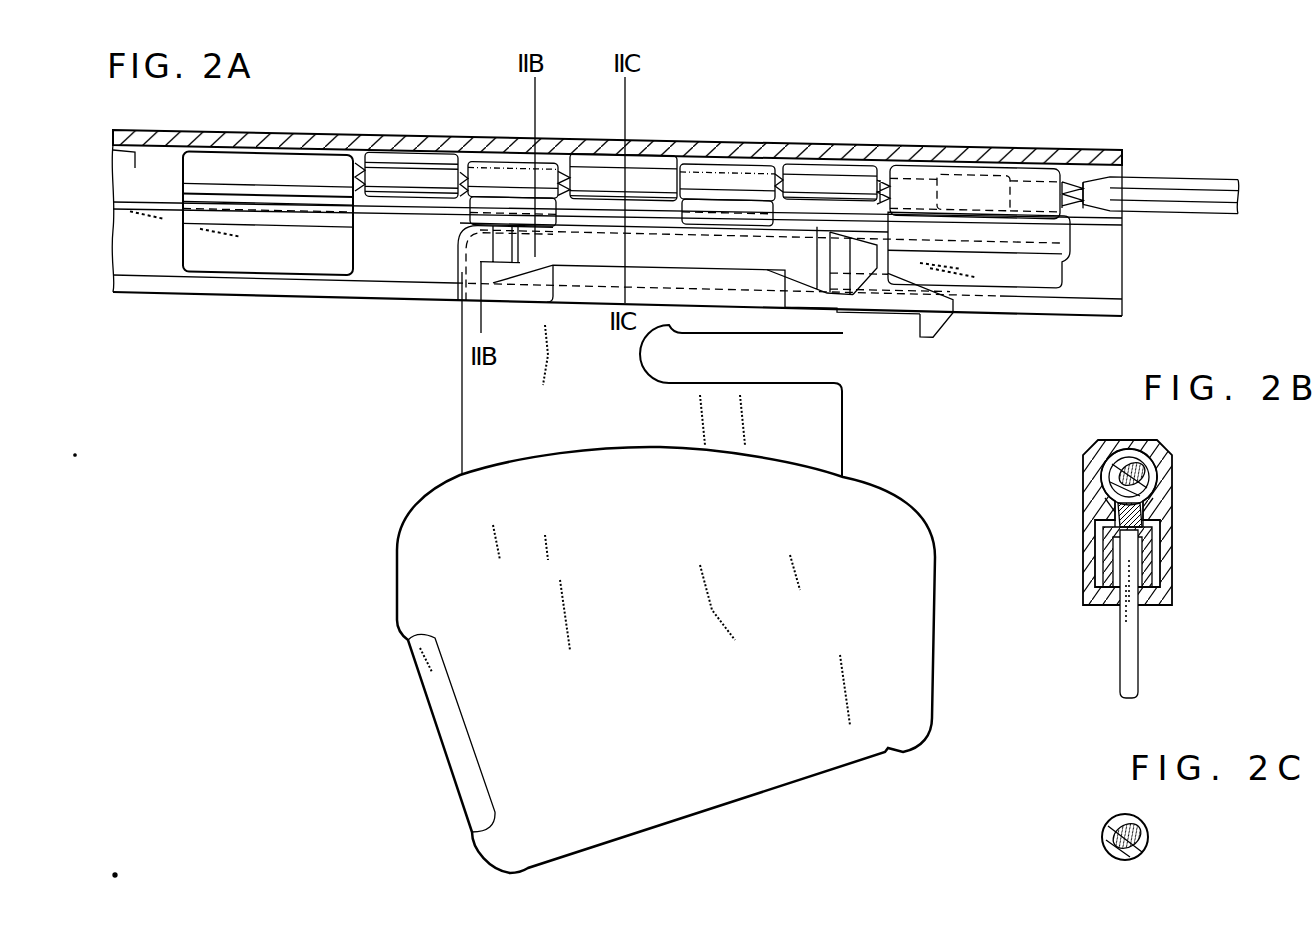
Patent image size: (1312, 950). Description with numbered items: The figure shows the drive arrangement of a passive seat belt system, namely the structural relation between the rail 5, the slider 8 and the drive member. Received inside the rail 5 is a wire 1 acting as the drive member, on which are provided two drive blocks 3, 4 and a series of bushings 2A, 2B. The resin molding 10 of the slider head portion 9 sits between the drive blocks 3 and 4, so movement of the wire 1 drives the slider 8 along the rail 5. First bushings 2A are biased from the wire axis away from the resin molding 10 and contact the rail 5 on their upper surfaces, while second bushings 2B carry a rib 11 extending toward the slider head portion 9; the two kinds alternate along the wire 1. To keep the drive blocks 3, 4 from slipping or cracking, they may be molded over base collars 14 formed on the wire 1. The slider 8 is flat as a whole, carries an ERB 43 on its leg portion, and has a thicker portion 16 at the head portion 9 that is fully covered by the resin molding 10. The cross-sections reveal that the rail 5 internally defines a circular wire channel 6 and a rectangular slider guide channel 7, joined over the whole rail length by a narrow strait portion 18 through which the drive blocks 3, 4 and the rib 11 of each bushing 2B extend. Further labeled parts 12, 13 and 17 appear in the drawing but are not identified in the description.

In FIG. 2B, the wire 1 is at (1124, 468).
In FIG. 2C, the wire 1 is at (1142, 850).
In FIG. 2A, the first bushings 2A is at (390, 168).
In FIG. 2C, the first bushings 2A is at (1108, 828).
In FIG. 2A, the second bushings 2B is at (494, 175).
In FIG. 2B, the second bushings 2B is at (1165, 472).
In FIG. 2A, the drive block 3 is at (263, 253).
In FIG. 2A, the drive block 4 is at (1010, 273).
In FIG. 2A, the rail 5 is at (300, 140).
In FIG. 2B, the rail 5 is at (1173, 557).
In FIG. 2B, the wire channel 6 is at (1100, 468).
In FIG. 2B, the slider guide channel 7 is at (1155, 525).
In FIG. 2A, the slider 8 is at (807, 430).
In FIG. 2B, the slider 8 is at (1138, 657).
In FIG. 2A, the slider head portion 9 is at (763, 268).
In FIG. 2A, the resin molding 10 is at (458, 298).
In FIG. 2B, the resin molding 10 is at (1088, 557).
In FIG. 2A, the rib 11 is at (463, 220).
In FIG. 2B, the rib 11 is at (1150, 503).
In FIG. 2A, the lever hook 12 is at (792, 222).
In FIG. 2A, the cover edge 13 is at (134, 170).
In FIG. 2A, the base collars 14 is at (975, 192).
In FIG. 2B, the thicker portion 16 is at (1110, 540).
In FIG. 2B, the contact flange 17 is at (1157, 590).
In FIG. 2B, the narrow strait portion 18 is at (1115, 507).
In FIG. 2A, the ERB 43 is at (890, 557).